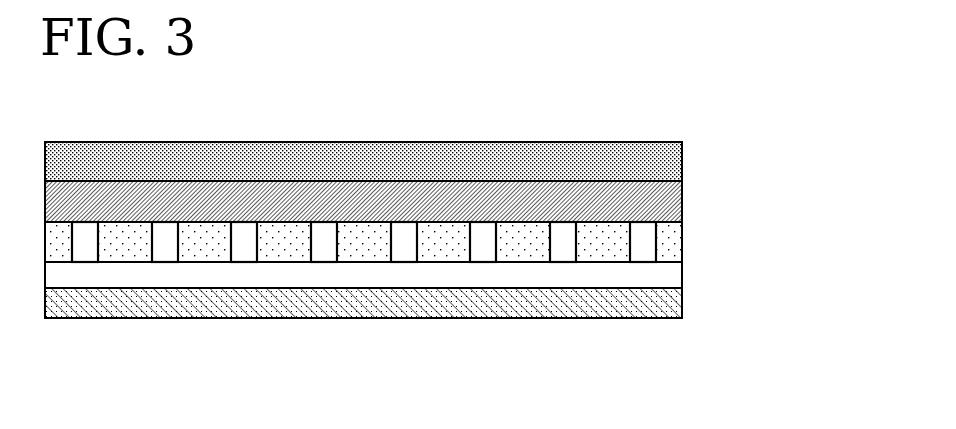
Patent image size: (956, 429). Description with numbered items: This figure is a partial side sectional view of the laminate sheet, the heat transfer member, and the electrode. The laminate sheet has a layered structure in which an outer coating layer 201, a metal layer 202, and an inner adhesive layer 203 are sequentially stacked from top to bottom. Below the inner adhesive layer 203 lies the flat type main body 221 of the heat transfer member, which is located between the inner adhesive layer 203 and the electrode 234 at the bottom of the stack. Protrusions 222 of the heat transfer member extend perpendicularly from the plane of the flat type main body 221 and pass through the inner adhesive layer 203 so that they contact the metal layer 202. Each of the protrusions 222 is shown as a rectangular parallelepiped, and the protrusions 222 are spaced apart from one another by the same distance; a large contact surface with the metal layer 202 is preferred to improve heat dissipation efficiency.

The outer coating layer 201 is at (682, 160).
The metal layer 202 is at (682, 202).
The inner adhesive layer 203 is at (682, 240).
The flat type main body 221 is at (682, 270).
The protrusions 222 is at (577, 243).
The electrode 234 is at (682, 297).